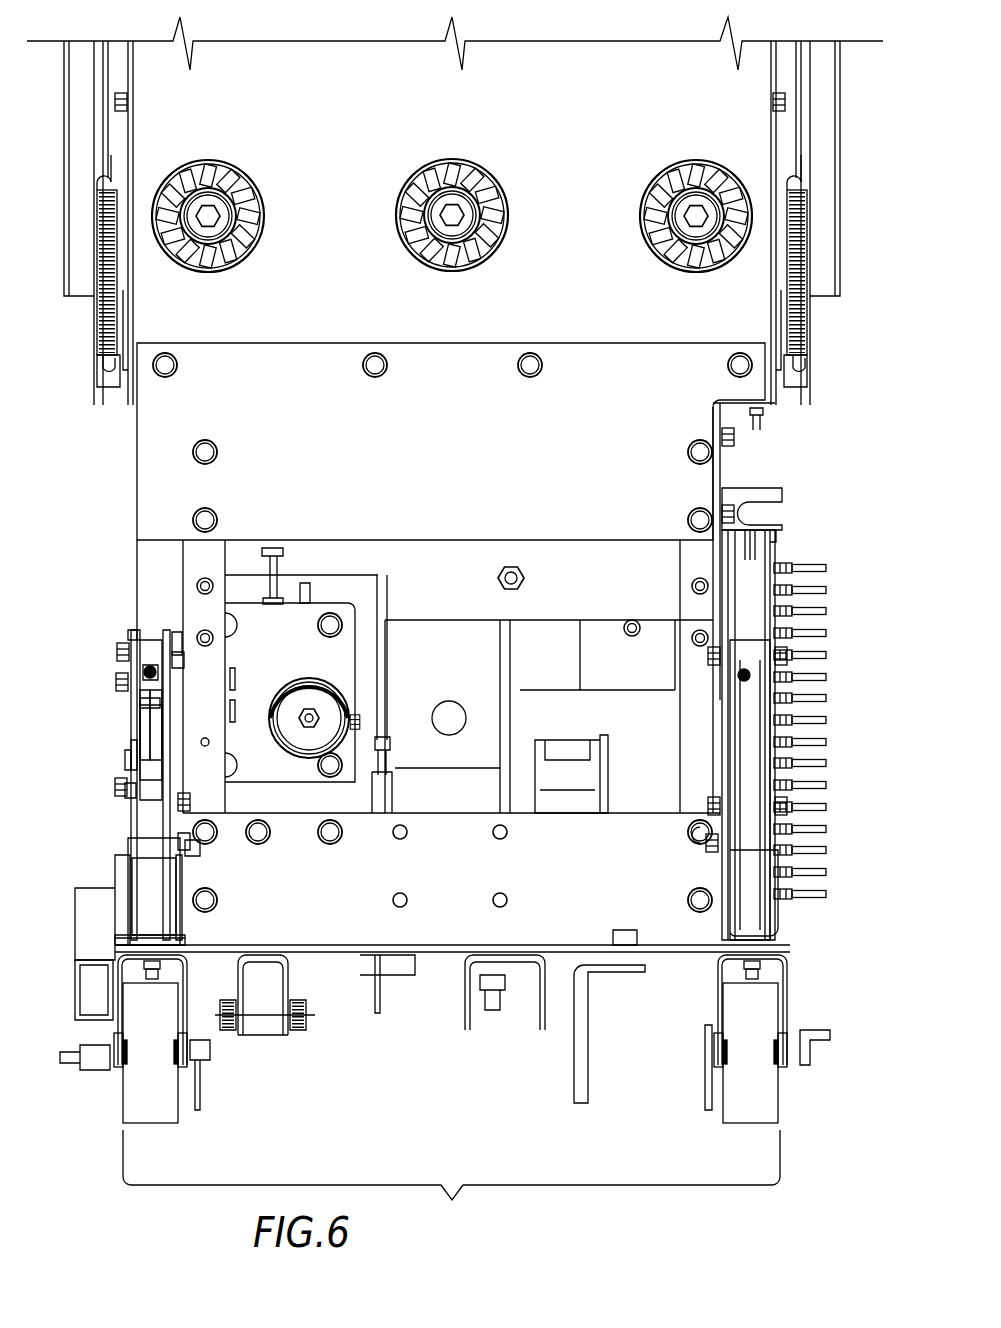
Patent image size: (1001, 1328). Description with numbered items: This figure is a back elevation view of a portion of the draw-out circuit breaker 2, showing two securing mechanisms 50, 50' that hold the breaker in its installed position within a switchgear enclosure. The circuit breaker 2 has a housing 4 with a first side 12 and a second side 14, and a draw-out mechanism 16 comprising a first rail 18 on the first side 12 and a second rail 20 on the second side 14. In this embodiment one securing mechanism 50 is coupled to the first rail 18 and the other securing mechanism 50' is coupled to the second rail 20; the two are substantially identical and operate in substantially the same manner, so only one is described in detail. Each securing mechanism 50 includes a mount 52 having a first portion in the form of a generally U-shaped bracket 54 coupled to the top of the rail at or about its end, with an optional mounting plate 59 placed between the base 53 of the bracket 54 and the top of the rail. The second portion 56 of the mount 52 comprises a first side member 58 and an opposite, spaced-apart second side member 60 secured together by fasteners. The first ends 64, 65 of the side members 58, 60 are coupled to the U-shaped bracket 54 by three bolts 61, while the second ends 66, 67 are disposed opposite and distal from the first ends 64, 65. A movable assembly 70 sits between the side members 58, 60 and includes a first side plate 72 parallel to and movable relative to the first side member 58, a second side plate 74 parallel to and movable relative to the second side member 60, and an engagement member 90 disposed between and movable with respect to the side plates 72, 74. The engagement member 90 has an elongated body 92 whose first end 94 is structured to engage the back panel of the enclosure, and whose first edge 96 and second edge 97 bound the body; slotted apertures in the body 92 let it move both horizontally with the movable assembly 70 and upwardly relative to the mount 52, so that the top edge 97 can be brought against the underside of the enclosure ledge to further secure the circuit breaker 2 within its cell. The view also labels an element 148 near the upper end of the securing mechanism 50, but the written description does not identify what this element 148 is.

The draw-out circuit breaker 2 is at (100, 487).
The housing 4 is at (145, 448).
The first side 12 is at (135, 540).
The second side 14 is at (725, 570).
The draw-out mechanism 16 is at (451, 1180).
The first rail 18 is at (115, 1023).
The second rail 20 is at (790, 993).
The securing mechanism 50 is at (92, 720).
The securing mechanism 50' is at (694, 790).
The mount 52 is at (195, 858).
The base 53 is at (135, 920).
The generally U-shaped bracket 54 is at (110, 870).
The second portion 56 is at (120, 752).
The first side member 58 is at (133, 637).
The mounting plate 59 is at (135, 938).
The second side member 60 is at (177, 640).
The bolts 61 is at (182, 845).
The first end 64 is at (130, 862).
The first end 65 is at (175, 865).
The second end 66 is at (140, 625).
The second end 67 is at (165, 625).
The movable assembly 70 is at (125, 760).
The first side plate 72 is at (160, 735).
The second side plate 74 is at (183, 660).
The engagement member 90 is at (148, 720).
The elongated body 92 is at (155, 713).
The first end 94 is at (210, 742).
The first edge 96 is at (130, 790).
The second edge 97 is at (138, 703).
The pivot 148 is at (150, 672).